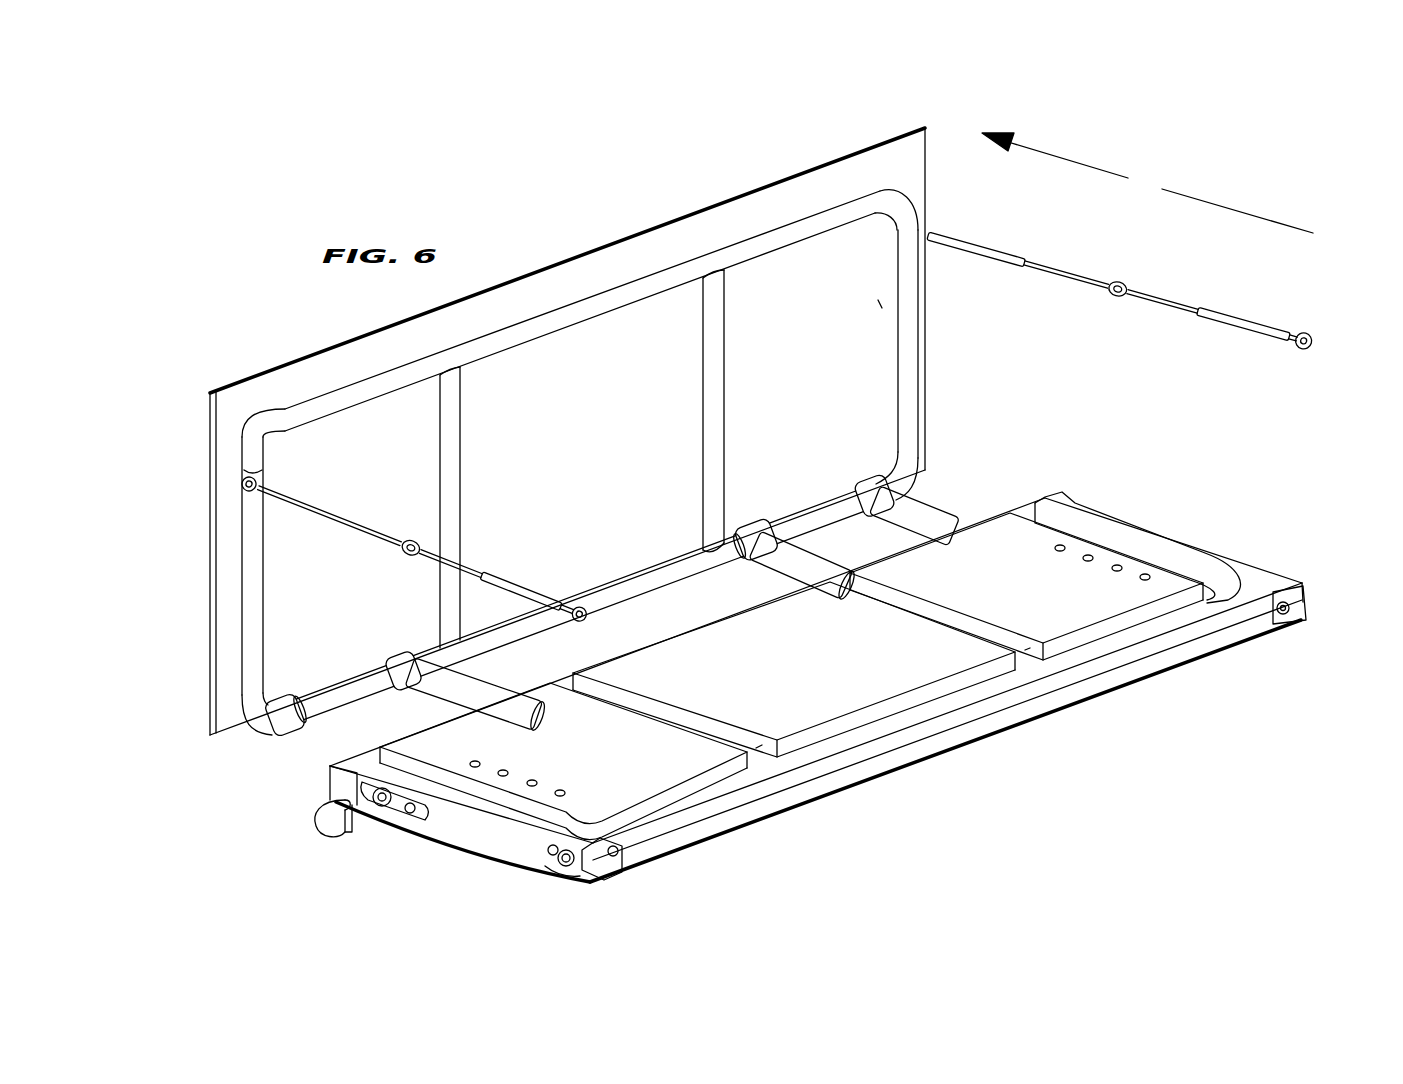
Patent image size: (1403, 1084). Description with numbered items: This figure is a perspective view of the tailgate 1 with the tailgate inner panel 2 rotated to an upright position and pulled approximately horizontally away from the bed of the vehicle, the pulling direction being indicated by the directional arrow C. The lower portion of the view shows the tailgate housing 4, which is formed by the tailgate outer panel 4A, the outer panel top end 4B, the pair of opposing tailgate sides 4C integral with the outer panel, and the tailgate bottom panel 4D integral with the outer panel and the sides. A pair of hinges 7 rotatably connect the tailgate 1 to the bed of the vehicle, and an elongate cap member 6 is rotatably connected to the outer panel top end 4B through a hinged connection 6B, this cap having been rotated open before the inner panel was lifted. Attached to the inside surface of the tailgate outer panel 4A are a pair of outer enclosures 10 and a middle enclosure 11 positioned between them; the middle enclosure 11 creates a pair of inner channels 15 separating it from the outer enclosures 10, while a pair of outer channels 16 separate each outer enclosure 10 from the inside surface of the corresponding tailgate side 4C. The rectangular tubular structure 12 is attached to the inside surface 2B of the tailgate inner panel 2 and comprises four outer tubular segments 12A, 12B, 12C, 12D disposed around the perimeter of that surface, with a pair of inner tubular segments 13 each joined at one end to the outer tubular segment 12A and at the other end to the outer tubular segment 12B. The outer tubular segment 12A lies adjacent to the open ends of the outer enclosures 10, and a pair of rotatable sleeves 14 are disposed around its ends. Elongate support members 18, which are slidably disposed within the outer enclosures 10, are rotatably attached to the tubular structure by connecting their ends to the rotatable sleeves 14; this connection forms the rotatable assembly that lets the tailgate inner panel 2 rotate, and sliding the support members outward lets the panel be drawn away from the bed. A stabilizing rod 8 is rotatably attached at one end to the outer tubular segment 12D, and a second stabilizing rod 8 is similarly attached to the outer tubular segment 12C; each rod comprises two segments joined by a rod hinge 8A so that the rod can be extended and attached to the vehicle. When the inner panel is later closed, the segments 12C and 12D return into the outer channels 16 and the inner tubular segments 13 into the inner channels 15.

The tailgate 1 is at (649, 176).
The tailgate inner panel 2 is at (927, 167).
The inside surface 2B is at (880, 307).
The tailgate housing 4 is at (827, 701).
The tailgate outer panel 4A is at (428, 852).
The outer panel top end 4B is at (350, 808).
The tailgate sides 4C is at (470, 842).
The tailgate bottom panel 4D is at (850, 760).
The elongate cap member 6 is at (317, 820).
The hinged connection 6B is at (347, 807).
The hinges 7 is at (597, 867).
The stabilizing rod 8 is at (540, 597).
The rod hinge 8A is at (410, 538).
The outer enclosures 10 is at (627, 773).
The middle enclosure 11 is at (928, 662).
The rectangular tubular structure 12 is at (571, 482).
The outer tubular segment 12A is at (668, 568).
The outer tubular segment 12B is at (628, 287).
The outer tubular segment 12C is at (912, 387).
The outer tubular segment 12D is at (248, 573).
The inner tubular segments 13 is at (450, 473).
The rotatable sleeves 14 is at (372, 655).
The inner channels 15 is at (763, 752).
The outer channels 16 is at (1180, 570).
The elongate support members 18 is at (443, 680).
The directional arrow C is at (1147, 183).